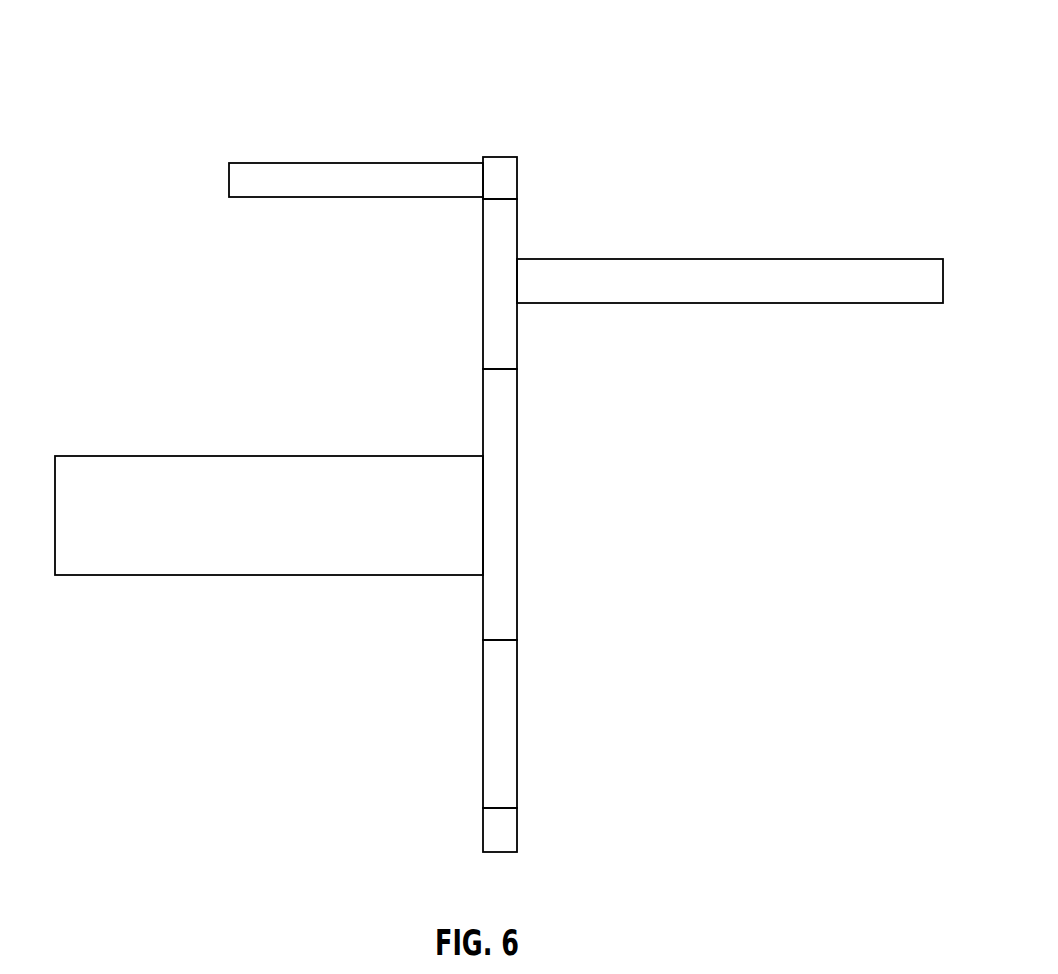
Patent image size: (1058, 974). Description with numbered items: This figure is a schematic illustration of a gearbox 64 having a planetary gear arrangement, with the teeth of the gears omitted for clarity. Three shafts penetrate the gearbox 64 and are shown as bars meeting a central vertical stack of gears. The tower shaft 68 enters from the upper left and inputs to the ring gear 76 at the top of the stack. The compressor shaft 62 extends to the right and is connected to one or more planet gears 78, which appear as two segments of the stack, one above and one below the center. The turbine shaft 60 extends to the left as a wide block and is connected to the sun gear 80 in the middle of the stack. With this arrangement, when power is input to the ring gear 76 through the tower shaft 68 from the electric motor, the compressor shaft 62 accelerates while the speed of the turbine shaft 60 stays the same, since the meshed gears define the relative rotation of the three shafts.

The gearbox 64 is at (141, 53).
The turbine shaft 60 is at (257, 575).
The compressor shaft 62 is at (742, 259).
The tower shaft 68 is at (360, 163).
The ring gear 76 is at (504, 185).
The planet gears 78 is at (498, 284).
The sun gear 80 is at (498, 517).